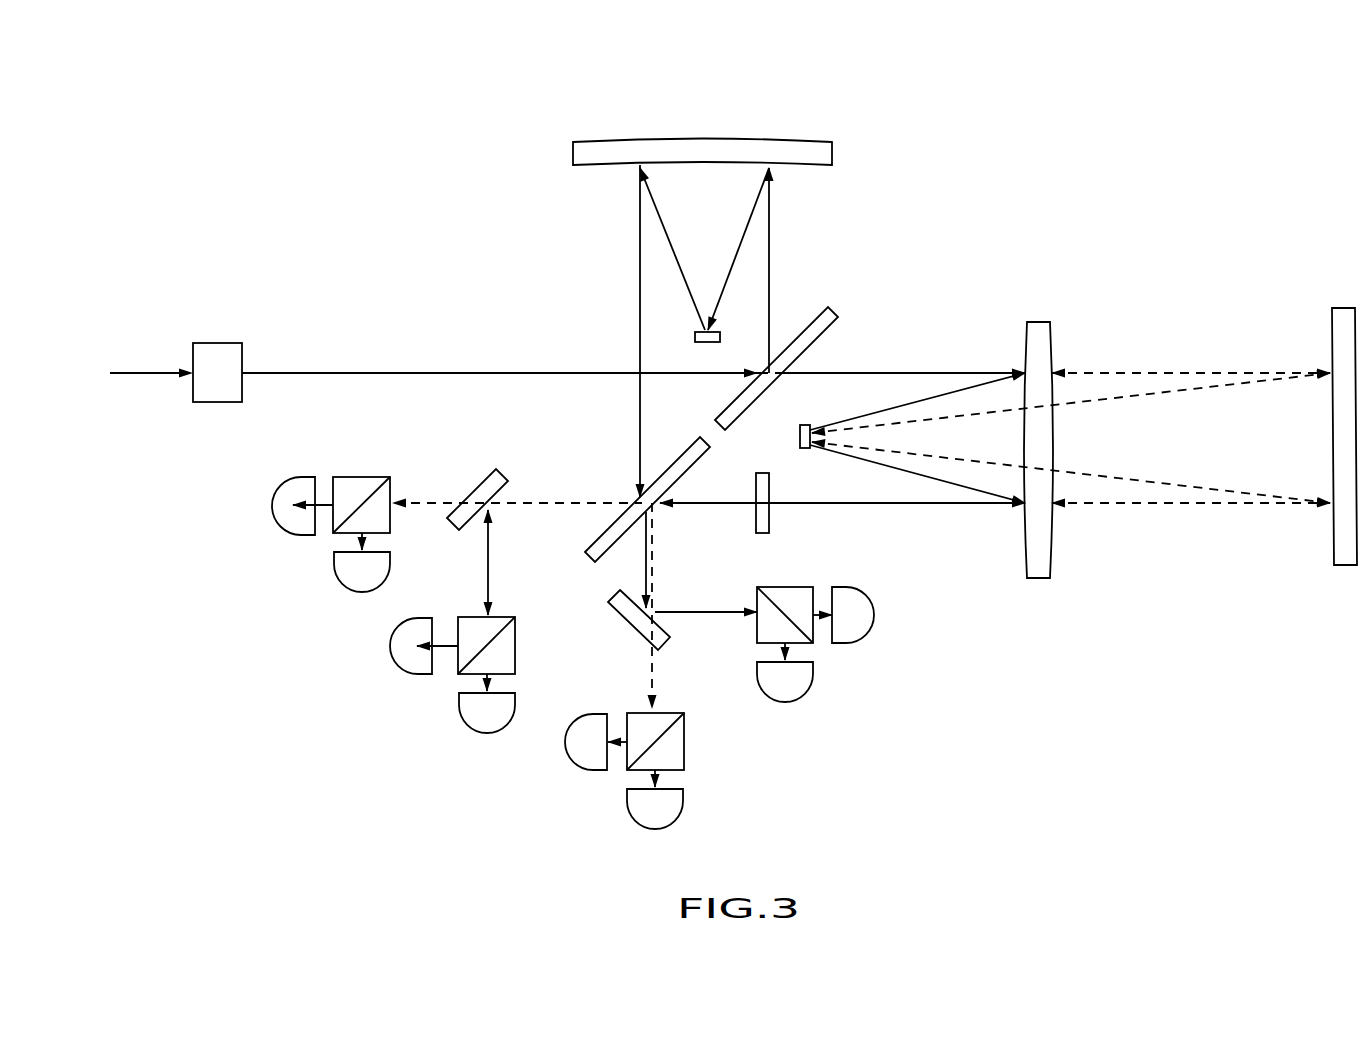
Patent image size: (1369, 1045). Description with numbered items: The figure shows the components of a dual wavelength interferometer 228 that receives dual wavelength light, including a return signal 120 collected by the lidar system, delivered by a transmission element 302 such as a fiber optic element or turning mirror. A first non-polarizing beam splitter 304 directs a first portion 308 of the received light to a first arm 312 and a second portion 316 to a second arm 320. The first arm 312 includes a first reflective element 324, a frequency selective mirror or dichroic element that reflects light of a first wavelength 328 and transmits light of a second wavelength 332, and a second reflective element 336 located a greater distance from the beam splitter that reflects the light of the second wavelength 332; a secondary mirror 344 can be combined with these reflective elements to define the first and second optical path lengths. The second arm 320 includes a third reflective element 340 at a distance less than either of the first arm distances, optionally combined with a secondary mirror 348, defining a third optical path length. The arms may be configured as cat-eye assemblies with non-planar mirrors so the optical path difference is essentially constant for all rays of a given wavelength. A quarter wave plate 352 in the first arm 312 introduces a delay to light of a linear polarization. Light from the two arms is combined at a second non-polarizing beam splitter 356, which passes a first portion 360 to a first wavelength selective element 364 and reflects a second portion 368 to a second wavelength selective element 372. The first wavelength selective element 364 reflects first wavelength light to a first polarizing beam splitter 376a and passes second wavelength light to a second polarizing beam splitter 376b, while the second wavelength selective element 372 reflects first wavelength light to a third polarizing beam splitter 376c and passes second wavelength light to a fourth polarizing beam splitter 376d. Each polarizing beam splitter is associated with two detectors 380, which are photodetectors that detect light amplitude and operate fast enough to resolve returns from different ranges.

The interferometer 228 is at (385, 172).
The transmission element 302 is at (215, 343).
The return signal 120 is at (377, 372).
The third reflective element 340 is at (688, 143).
The second arm 320 is at (808, 206).
The second portion 316 is at (775, 250).
The secondary mirror 348 is at (703, 342).
The first non-polarizing beam splitter 304 is at (826, 310).
The first portion 308 is at (917, 372).
The second non-polarizing beam splitter 356 is at (678, 442).
The secondary mirror 344 is at (800, 437).
The light of a first wavelength 328 is at (897, 410).
The quarter wave plate 352 is at (770, 482).
The first arm 312 is at (1065, 278).
The first reflective element 324 is at (1038, 325).
The light of a second wavelength 332 is at (1158, 368).
The second reflective element 336 is at (1345, 310).
The first portion of the combined light 360 is at (562, 500).
The first wavelength selective element 364 is at (490, 468).
The second portion of the combined light 368 is at (652, 537).
The second wavelength selective element 372 is at (620, 598).
The first polarizing beam splitter 376a is at (466, 622).
The second polarizing beam splitter 376b is at (338, 478).
The third polarizing beam splitter 376c is at (808, 592).
The fourth polarizing beam splitter 376d is at (637, 718).
The detectors 380 is at (278, 508).